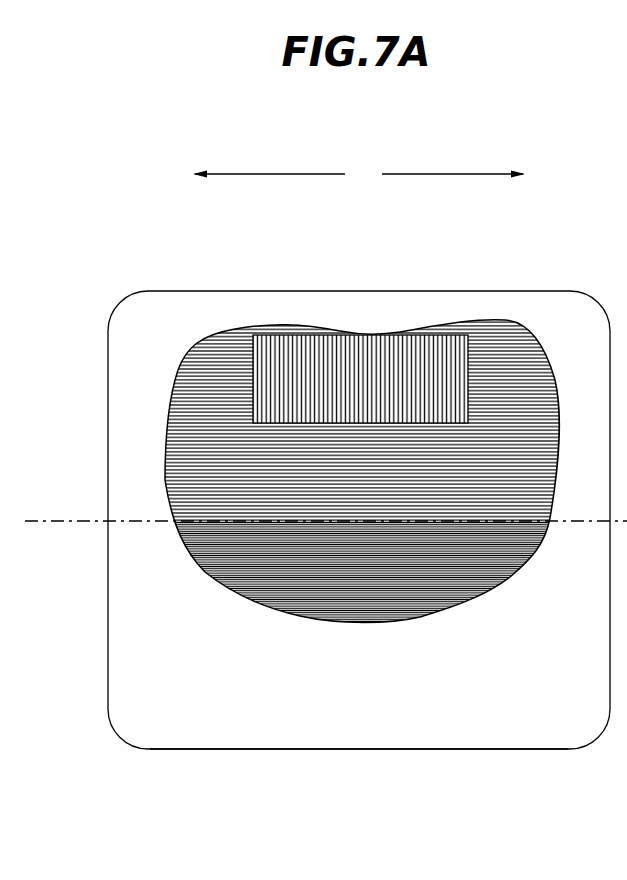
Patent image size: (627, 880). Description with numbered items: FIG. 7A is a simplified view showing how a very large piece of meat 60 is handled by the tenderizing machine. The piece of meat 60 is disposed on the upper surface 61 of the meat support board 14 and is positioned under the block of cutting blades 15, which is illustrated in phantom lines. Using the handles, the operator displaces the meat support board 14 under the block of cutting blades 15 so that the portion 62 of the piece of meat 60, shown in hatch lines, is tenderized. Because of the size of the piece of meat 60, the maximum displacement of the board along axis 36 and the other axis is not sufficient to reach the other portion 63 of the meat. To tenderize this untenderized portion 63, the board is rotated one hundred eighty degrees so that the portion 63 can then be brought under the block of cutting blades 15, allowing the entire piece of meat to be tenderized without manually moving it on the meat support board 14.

The meat support board 14 is at (358, 749).
The block of cutting blades 15 is at (360, 379).
The axis 36 is at (359, 174).
The piece of meat 60 is at (326, 452).
The upper surface 61 is at (157, 709).
The portion 62 is at (213, 410).
The other portion 63 is at (423, 573).